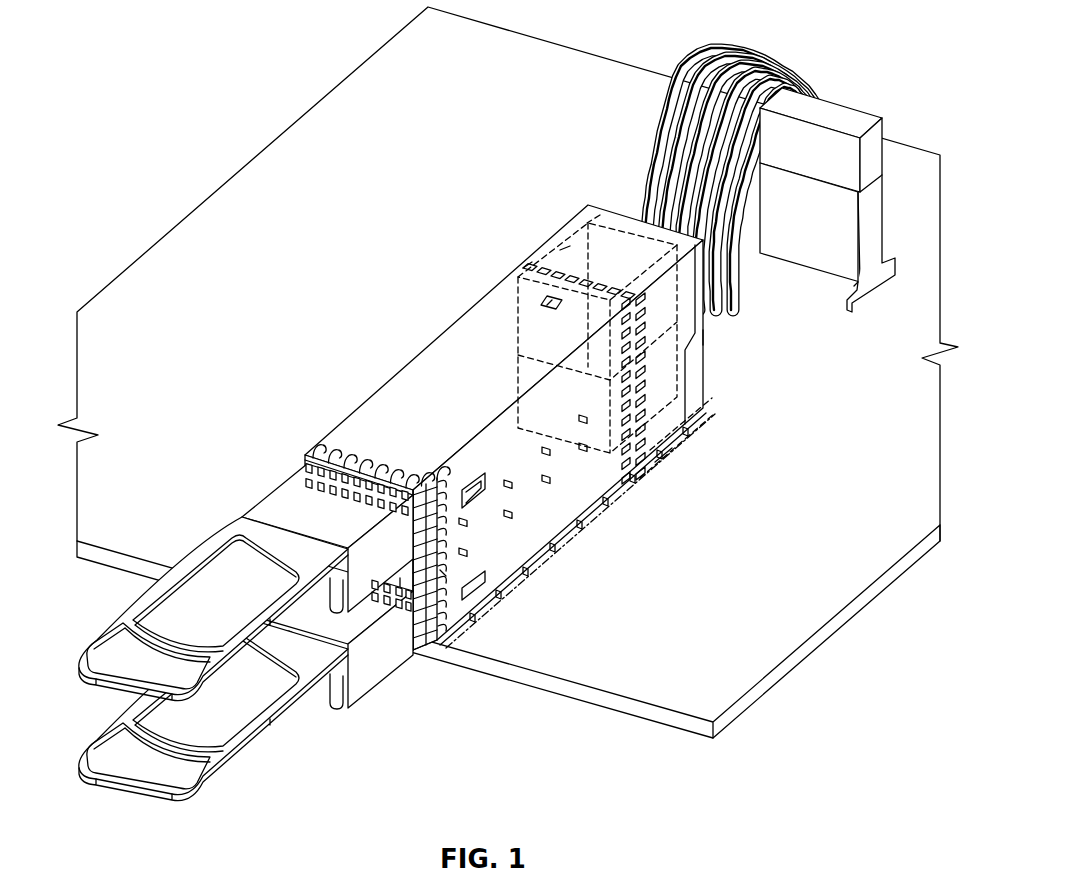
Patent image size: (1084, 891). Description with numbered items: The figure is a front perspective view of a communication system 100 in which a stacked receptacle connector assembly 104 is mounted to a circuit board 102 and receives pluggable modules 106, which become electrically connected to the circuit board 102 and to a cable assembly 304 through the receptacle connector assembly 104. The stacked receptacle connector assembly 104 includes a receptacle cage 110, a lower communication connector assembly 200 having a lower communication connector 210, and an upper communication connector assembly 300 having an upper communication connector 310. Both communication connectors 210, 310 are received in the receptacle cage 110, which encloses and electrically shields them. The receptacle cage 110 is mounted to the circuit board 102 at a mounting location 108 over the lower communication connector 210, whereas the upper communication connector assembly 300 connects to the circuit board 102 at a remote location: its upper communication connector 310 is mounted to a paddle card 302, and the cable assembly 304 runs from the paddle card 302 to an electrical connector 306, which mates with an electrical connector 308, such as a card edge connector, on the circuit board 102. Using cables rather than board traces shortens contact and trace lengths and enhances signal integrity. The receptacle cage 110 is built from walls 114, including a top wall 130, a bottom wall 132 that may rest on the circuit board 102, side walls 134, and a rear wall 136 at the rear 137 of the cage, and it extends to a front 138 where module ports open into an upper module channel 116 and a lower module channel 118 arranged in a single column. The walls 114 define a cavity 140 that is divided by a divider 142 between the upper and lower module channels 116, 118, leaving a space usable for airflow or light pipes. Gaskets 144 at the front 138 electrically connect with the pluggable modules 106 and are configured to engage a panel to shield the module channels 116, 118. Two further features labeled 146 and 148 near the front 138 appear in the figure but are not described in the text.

The communication system 100 is at (131, 245).
The circuit board 102 is at (672, 700).
The stacked receptacle connector assembly 104 is at (496, 477).
The pluggable module 106 is at (270, 510).
The mounting location 108 is at (665, 455).
The receptacle cage 110 is at (562, 257).
The walls 114 is at (430, 353).
The upper module channel 116 is at (302, 465).
The lower module channel 118 is at (413, 650).
The top wall 130 is at (462, 316).
The bottom wall 132 is at (543, 548).
The side walls 134 is at (563, 488).
The rear wall 136 is at (710, 303).
The rear 137 is at (705, 335).
The front 138 is at (321, 456).
The cavity 140 is at (528, 267).
The divider 142 is at (427, 634).
The gaskets 144 is at (360, 453).
The gasket collar 146 is at (400, 578).
The collar flange 148 is at (443, 573).
The lower communication connector assembly 200 is at (707, 408).
The lower communication connector 210 is at (690, 433).
The upper communication connector assembly 300 is at (545, 235).
The paddle card 302 is at (523, 265).
The cable assembly 304 is at (691, 49).
The electrical connector 306 is at (855, 186).
The electrical connector 308 is at (873, 217).
The upper communication connector 310 is at (600, 215).